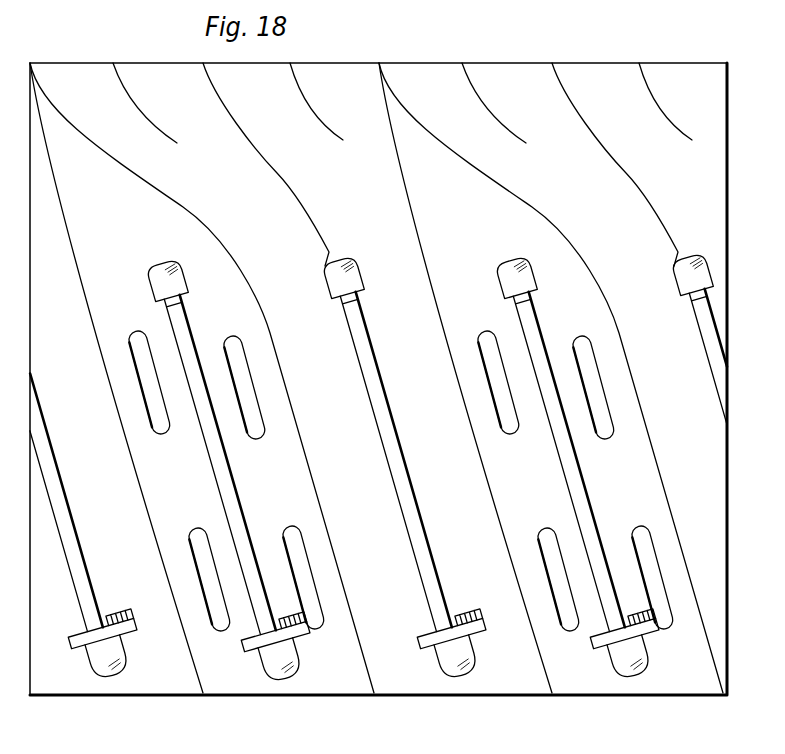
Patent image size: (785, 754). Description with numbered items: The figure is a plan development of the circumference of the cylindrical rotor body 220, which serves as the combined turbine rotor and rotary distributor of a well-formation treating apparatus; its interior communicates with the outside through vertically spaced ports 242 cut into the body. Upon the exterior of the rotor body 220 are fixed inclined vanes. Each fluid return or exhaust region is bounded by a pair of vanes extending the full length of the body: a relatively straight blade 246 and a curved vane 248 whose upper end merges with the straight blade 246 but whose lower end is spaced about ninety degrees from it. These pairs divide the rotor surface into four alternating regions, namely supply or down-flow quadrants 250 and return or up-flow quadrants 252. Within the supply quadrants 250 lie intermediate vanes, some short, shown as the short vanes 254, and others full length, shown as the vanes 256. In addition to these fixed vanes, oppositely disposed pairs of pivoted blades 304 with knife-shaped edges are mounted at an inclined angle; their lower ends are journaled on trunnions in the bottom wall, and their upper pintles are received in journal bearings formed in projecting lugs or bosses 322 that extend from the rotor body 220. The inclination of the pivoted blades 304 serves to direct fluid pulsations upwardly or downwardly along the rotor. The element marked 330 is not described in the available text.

The rotor body 220 is at (420, 677).
The ports 242 is at (196, 530).
The straight blade 246 is at (113, 400).
The curved vane 248 is at (297, 420).
The supply quadrants 250 is at (180, 680).
The return quadrants 252 is at (328, 680).
The short intermediate vanes 254 is at (161, 128).
The full length intermediate vanes 256 is at (233, 130).
The pivoted blades 304 is at (238, 485).
The lugs 322 is at (183, 287).
The washer 330 is at (258, 652).